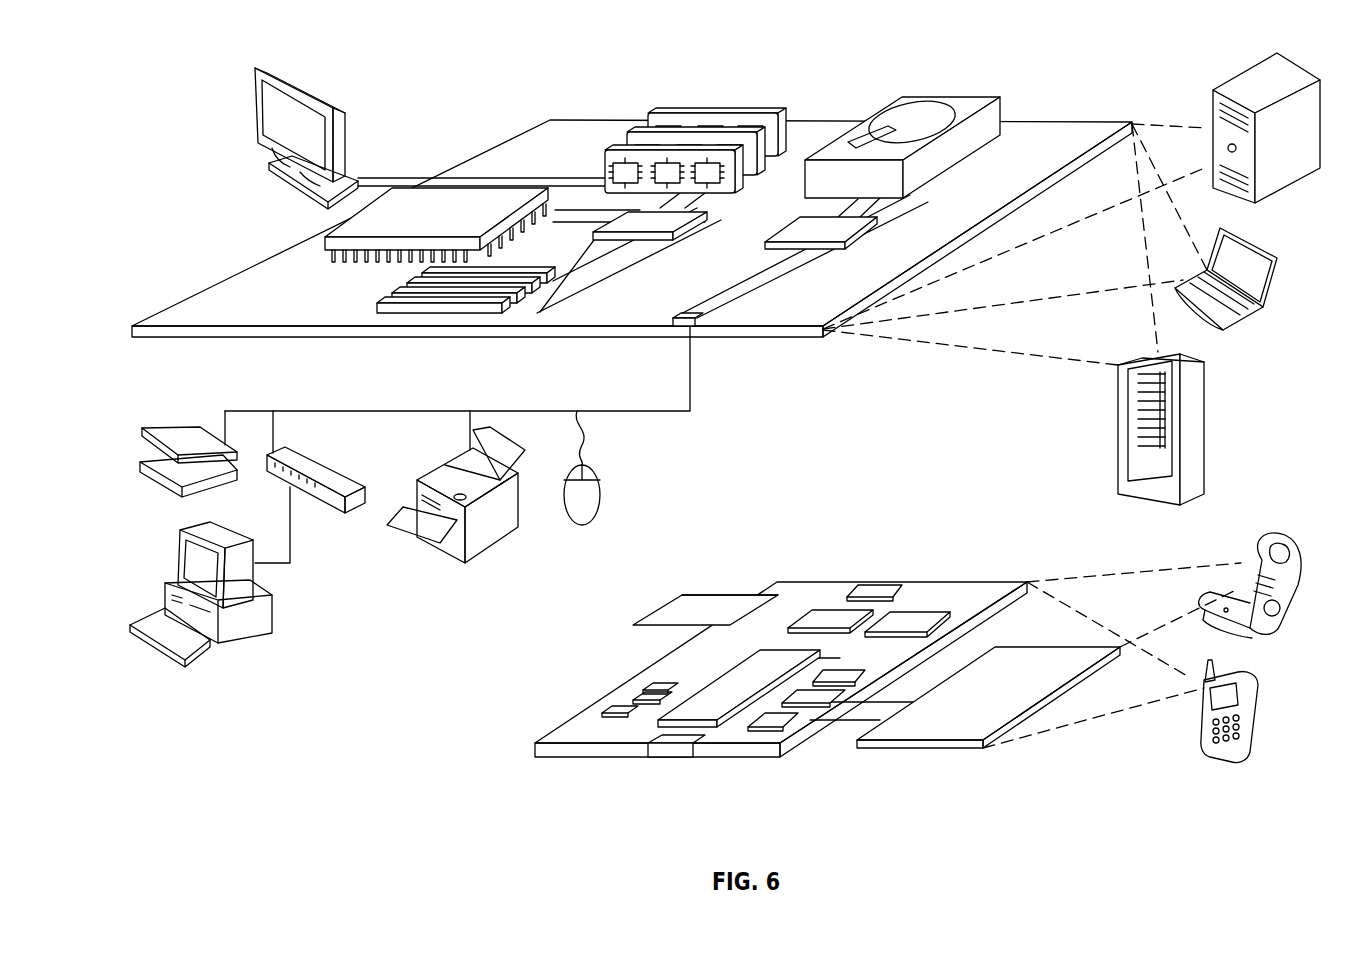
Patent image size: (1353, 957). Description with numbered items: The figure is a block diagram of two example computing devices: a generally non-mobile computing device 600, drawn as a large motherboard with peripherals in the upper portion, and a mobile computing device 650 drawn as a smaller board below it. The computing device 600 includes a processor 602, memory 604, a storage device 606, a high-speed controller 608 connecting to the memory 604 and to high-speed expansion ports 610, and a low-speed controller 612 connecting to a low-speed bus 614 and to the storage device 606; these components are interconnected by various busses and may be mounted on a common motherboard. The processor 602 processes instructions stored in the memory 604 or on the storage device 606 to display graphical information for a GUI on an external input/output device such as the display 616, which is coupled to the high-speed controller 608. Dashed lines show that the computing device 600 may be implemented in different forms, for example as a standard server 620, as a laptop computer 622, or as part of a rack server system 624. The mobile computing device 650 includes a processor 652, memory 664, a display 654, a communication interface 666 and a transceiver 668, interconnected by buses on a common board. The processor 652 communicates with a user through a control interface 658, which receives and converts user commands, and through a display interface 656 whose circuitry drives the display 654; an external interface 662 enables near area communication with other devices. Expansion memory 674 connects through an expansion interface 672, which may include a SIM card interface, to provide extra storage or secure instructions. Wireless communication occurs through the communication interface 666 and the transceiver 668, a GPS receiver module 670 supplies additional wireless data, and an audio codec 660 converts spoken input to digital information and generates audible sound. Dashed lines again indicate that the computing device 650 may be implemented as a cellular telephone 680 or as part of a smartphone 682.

The computing device 600 is at (158, 74).
The processor 602 is at (333, 242).
The memory 604 is at (655, 115).
The storage device 606 is at (887, 102).
The high-speed controller 608 is at (625, 222).
The high-speed expansion ports 610 is at (400, 297).
The low-speed controller 612 is at (803, 227).
The low-speed bus 614 is at (700, 326).
The display 616 is at (256, 69).
The standard server 620 is at (1213, 108).
The laptop computer 622 is at (1278, 258).
The rack server system 624 is at (1116, 452).
The computing device 650 is at (508, 755).
The processor 652 is at (712, 712).
The display 654 is at (950, 730).
The display interface 656 is at (778, 722).
The control interface 658 is at (815, 697).
The audio codec 660 is at (840, 677).
The external interface 662 is at (677, 747).
The memory 664 is at (630, 704).
The communication interface 666 is at (832, 618).
The transceiver 668 is at (910, 620).
The GPS receiver module 670 is at (881, 582).
The expansion interface 672 is at (745, 594).
The expansion memory 674 is at (677, 595).
The cellular telephone 680 is at (1260, 545).
The smartphone 682 is at (1204, 716).